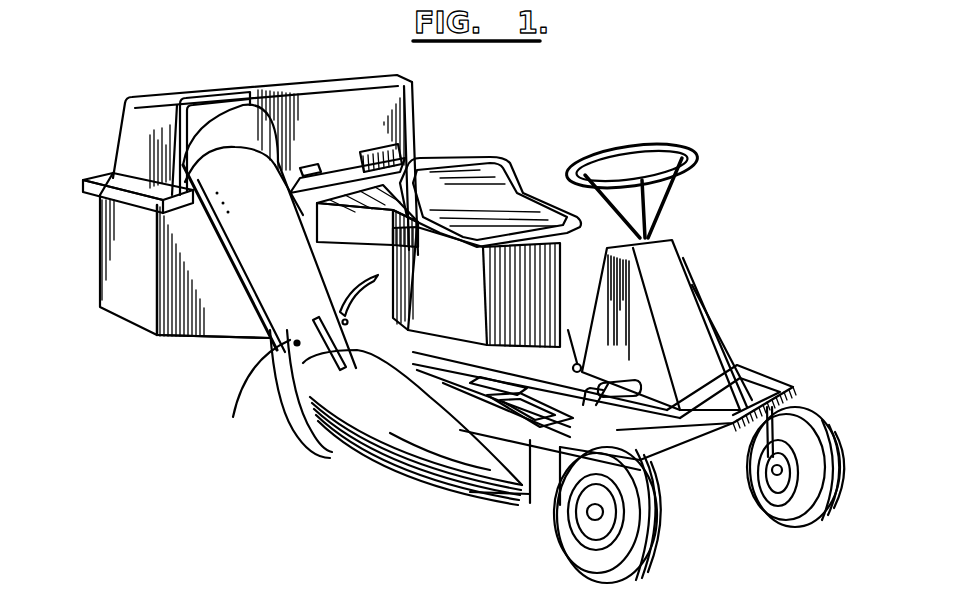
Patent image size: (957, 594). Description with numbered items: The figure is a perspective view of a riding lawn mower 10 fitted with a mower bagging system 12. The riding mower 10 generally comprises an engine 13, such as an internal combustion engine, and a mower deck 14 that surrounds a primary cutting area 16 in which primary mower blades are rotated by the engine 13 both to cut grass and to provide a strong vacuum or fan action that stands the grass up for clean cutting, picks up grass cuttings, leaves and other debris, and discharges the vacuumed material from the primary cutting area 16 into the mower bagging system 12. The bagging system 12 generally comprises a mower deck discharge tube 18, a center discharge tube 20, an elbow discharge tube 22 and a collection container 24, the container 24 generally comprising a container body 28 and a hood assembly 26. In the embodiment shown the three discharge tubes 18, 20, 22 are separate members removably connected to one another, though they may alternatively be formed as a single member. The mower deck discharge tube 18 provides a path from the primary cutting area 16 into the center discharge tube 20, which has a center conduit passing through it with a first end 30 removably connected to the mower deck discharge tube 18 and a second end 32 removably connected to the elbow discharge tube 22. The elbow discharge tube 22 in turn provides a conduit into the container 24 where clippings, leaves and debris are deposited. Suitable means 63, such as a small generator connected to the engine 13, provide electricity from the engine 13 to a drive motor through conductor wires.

The riding lawn mower 10 is at (765, 170).
The mower bagging system 12 is at (115, 325).
The engine 13 is at (425, 270).
The mower deck 14 is at (530, 508).
The primary cutting area 16 is at (683, 505).
The mower deck discharge tube 18 is at (372, 460).
The center discharge tube 20 is at (305, 269).
The elbow discharge tube 22 is at (205, 130).
The collection container 24 is at (133, 138).
The hood assembly 26 is at (417, 106).
The container body 28 is at (188, 336).
The first end 30 is at (305, 358).
The second end 32 is at (227, 180).
The means for providing electricity 63 is at (362, 285).